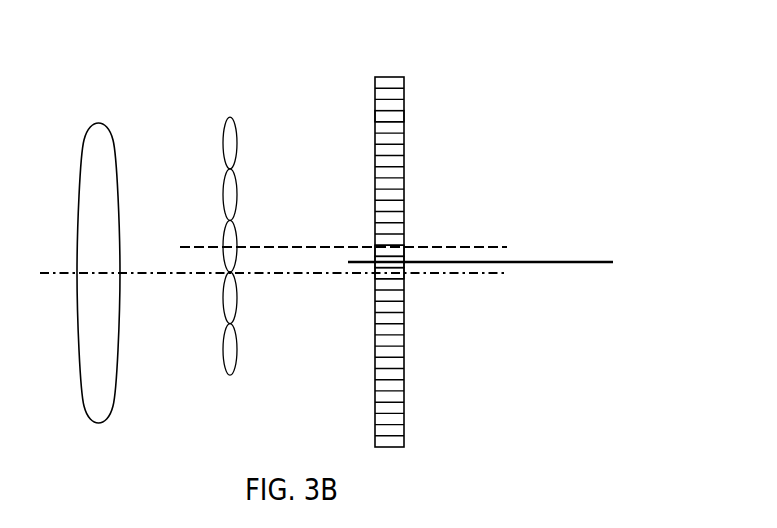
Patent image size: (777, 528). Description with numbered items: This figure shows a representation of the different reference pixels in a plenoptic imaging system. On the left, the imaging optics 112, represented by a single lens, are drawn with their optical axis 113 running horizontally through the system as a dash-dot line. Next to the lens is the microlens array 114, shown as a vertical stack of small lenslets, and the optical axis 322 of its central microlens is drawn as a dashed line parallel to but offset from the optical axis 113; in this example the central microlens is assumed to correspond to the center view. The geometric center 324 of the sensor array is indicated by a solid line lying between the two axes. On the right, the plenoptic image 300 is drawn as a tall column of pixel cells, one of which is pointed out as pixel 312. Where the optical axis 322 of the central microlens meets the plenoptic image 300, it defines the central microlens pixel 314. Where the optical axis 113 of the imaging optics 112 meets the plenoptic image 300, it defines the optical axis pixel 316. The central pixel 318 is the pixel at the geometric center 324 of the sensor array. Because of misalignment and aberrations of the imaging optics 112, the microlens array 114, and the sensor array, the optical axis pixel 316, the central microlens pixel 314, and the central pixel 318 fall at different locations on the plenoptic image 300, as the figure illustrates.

The imaging optics 112 is at (108, 104).
The microlens array 114 is at (241, 104).
The optical axis 113 is at (51, 266).
The plenoptic image 300 is at (401, 72).
The detector pixel 312 is at (375, 112).
The central microlens pixel 314 is at (405, 247).
The optical axis pixel 316 is at (375, 277).
The central pixel 318 is at (405, 266).
The optical axis of the central microlens 322 is at (206, 244).
The geometric center of the sensor array 324 is at (589, 254).